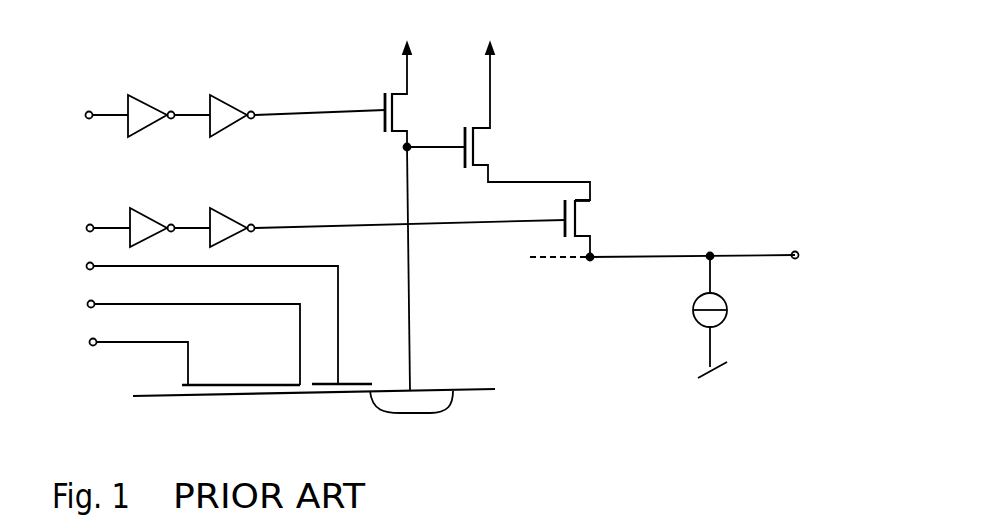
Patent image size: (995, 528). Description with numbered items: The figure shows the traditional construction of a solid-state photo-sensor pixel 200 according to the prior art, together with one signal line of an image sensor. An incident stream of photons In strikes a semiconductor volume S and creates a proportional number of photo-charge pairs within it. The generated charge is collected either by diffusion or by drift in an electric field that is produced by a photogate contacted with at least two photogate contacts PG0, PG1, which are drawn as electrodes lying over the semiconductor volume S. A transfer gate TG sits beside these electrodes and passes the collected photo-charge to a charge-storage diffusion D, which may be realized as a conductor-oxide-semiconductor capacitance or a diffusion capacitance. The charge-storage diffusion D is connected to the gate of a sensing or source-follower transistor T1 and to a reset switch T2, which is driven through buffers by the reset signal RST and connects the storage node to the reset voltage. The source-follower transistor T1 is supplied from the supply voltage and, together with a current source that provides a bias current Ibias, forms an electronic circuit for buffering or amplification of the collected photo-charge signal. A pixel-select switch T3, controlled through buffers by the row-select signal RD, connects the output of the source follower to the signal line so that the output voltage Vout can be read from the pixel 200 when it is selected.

The prior-art pixel 200 is at (186, 61).
The reset signal RST is at (87, 114).
The row-select signal RD is at (306, 227).
The transfer gate TG is at (192, 320).
The photogate contact PG1 is at (173, 338).
The photogate contact PG0 is at (117, 358).
The incident radiation In is at (228, 372).
The semiconductor volume S is at (263, 427).
The charge-storage diffusion D is at (427, 402).
The sensing/source-follower transistor T1 is at (498, 105).
The reset switch T2 is at (406, 200).
The pixel-select switch T3 is at (566, 230).
The output voltage Vout is at (721, 255).
The bias current for source follower transistor Ibias is at (735, 317).